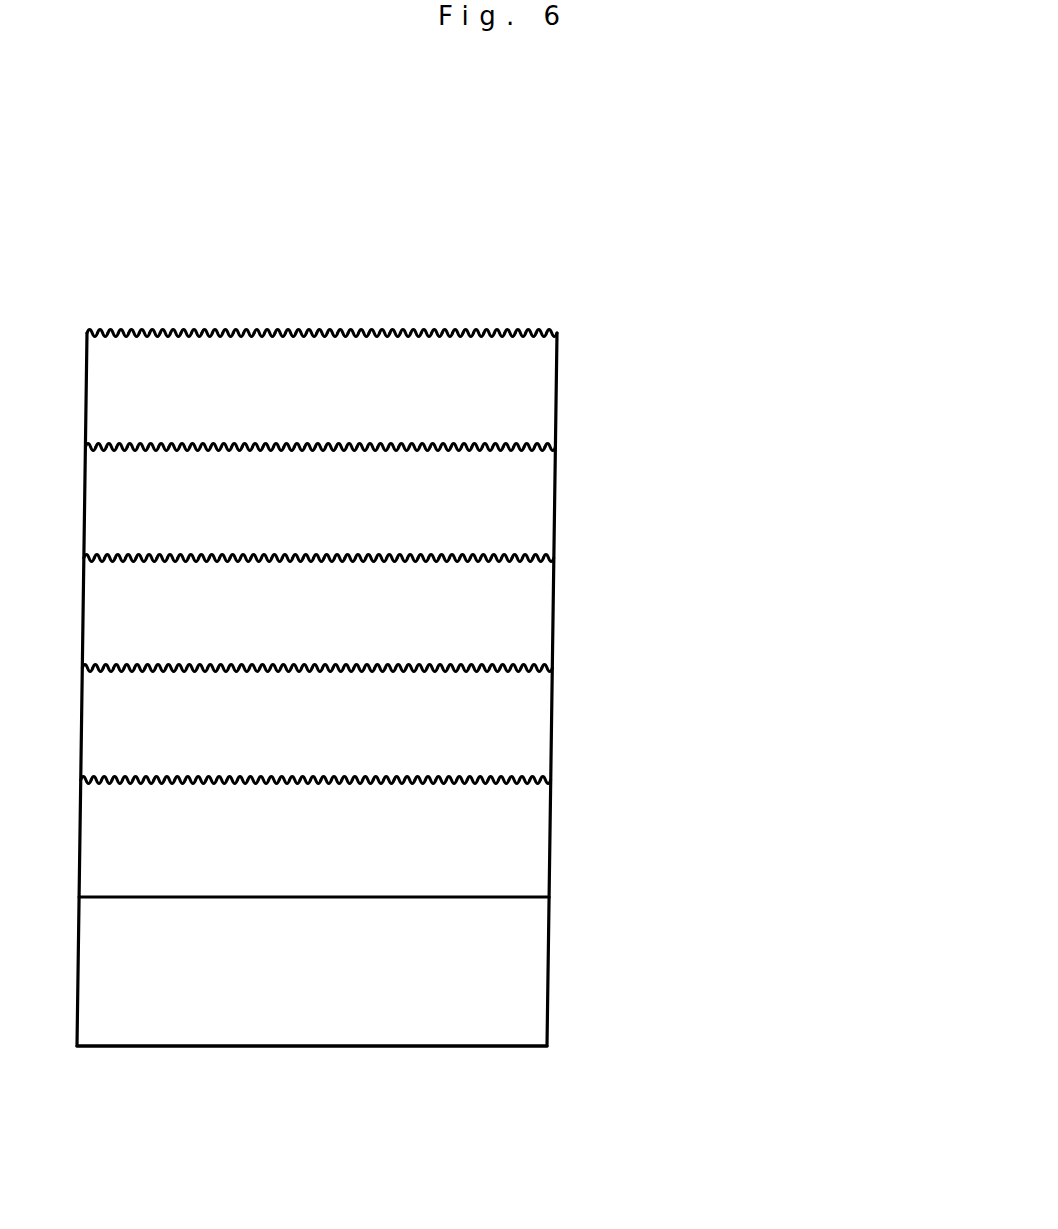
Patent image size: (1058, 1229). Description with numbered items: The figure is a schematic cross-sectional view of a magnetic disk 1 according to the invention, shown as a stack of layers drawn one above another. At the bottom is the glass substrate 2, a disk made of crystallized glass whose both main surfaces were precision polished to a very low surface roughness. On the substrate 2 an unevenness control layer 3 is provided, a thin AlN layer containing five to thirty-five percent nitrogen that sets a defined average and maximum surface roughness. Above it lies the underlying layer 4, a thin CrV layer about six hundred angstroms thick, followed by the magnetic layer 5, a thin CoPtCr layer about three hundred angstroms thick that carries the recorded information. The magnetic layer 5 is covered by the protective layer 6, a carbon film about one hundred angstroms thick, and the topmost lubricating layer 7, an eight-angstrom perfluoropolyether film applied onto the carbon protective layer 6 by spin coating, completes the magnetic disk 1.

The magnetic disk 1 is at (462, 303).
The glass substrate 2 is at (508, 972).
The unevenness control layer 3 is at (510, 845).
The underlying layer 4 is at (512, 725).
The magnetic layer 5 is at (514, 607).
The protective layer 6 is at (517, 495).
The lubricating layer 7 is at (518, 392).